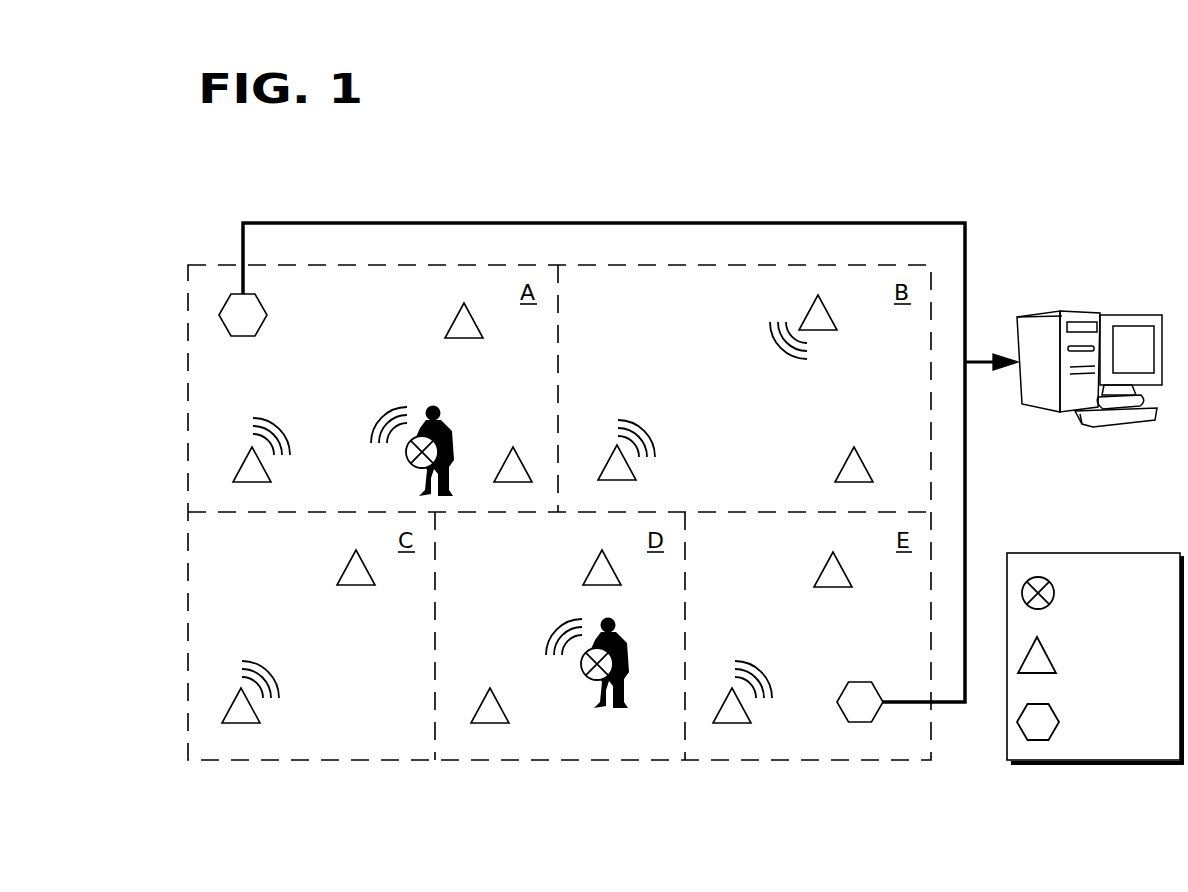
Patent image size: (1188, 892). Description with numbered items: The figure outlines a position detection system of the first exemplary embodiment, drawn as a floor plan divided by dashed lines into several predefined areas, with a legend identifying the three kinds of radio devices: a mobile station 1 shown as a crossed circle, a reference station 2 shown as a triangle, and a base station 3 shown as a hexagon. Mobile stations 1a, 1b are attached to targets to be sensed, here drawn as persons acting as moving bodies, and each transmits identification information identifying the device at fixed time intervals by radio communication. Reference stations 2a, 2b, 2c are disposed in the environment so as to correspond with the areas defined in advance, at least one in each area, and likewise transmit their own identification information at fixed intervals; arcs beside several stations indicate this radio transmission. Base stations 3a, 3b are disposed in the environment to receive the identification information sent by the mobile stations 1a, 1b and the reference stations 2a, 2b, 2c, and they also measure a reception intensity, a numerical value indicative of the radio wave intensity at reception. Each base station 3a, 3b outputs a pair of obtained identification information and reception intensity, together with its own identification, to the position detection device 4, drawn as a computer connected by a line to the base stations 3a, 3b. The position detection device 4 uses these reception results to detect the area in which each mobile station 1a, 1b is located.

The mobile station 1 is at (1095, 592).
The mobile station 1a is at (412, 451).
The mobile station 1b is at (587, 666).
The reference station 2 is at (1098, 656).
The reference station 2a is at (249, 450).
The reference station 2b is at (454, 313).
The reference station 2c is at (515, 450).
The base station 3 is at (1093, 721).
The base station 3a is at (260, 312).
The base station 3b is at (860, 720).
The position detection device 4 is at (1073, 313).